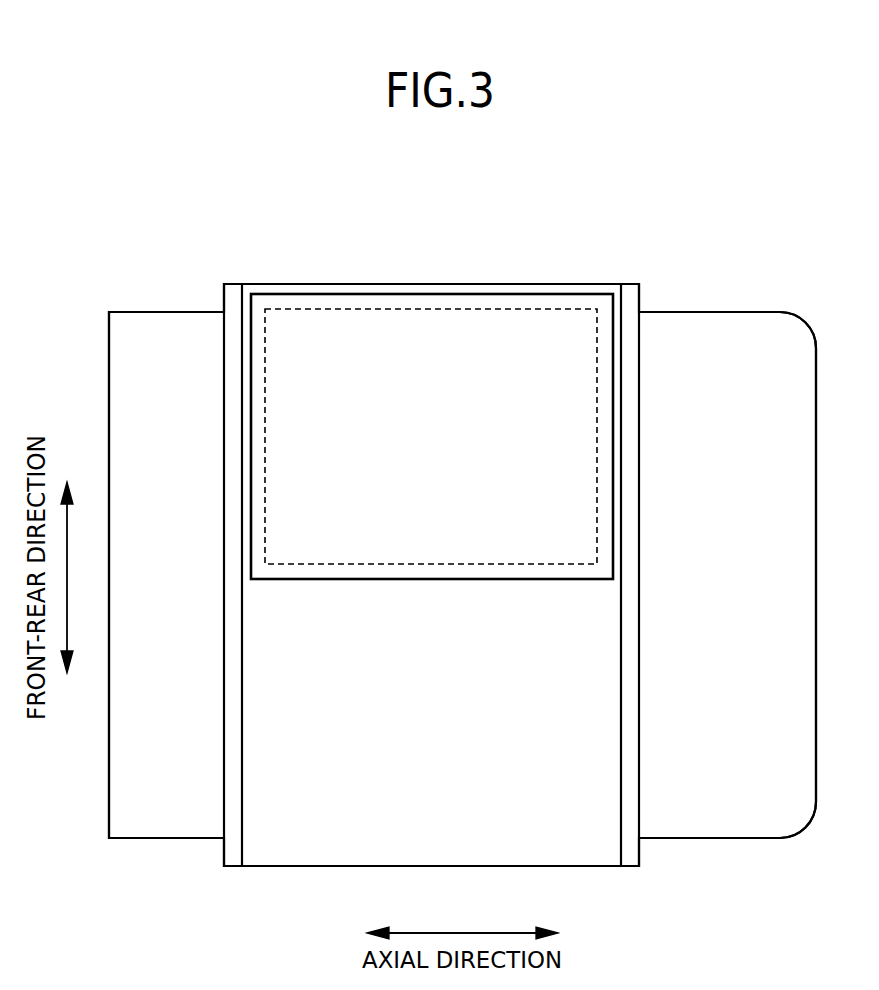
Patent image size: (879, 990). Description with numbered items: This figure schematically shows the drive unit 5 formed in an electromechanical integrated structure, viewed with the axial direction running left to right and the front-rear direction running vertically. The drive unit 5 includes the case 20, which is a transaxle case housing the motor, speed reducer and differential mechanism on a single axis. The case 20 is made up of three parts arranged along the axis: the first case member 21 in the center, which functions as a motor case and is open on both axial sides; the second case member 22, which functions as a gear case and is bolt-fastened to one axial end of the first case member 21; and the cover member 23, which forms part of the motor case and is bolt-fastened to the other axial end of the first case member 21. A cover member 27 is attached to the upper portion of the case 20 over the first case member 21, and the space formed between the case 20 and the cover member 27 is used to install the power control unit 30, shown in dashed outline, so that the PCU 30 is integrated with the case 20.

The drive unit 5 is at (462, 509).
The case 20 is at (462, 542).
The first case member 21 is at (566, 284).
The second case member 22 is at (688, 312).
The cover member 23 is at (156, 310).
The cover member 27 is at (293, 283).
The power control unit (PCU) 30 is at (393, 308).